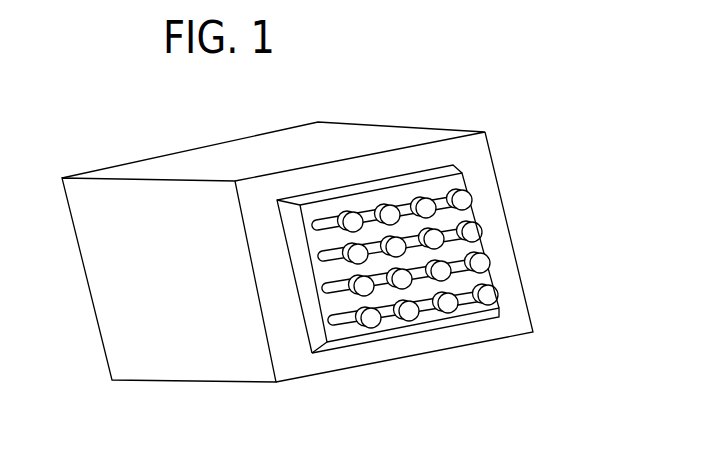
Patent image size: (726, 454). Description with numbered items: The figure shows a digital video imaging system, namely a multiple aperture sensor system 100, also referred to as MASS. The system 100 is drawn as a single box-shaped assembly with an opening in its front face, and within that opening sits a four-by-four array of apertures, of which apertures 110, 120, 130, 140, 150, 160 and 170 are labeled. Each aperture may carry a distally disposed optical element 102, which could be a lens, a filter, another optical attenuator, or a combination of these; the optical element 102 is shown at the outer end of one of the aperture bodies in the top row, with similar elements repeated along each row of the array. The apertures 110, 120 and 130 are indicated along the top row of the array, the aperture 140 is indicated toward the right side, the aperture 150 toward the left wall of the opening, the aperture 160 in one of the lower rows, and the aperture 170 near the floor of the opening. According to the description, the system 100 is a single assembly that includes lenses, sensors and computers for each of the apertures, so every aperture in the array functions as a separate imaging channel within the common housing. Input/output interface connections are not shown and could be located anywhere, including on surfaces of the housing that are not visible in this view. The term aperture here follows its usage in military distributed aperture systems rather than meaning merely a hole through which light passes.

The multiple aperture sensor system 100 is at (377, 95).
The optical element 102 is at (316, 223).
The aperture 110 is at (344, 207).
The aperture 120 is at (387, 199).
The aperture 130 is at (423, 193).
The aperture 140 is at (479, 194).
The aperture 150 is at (316, 256).
The aperture 160 is at (348, 298).
The aperture 170 is at (373, 342).